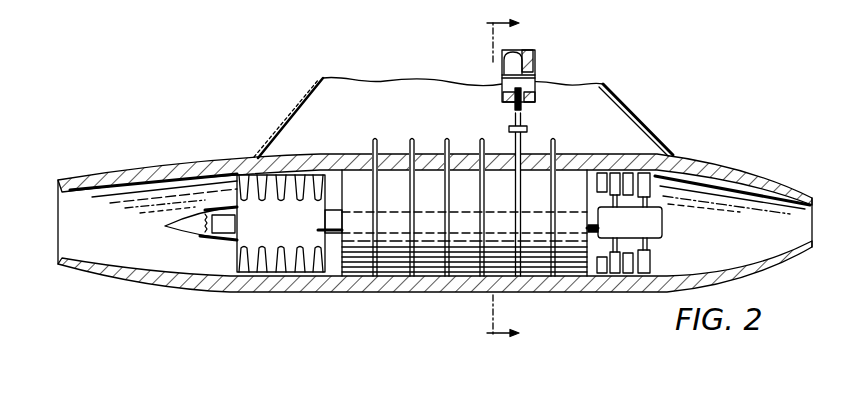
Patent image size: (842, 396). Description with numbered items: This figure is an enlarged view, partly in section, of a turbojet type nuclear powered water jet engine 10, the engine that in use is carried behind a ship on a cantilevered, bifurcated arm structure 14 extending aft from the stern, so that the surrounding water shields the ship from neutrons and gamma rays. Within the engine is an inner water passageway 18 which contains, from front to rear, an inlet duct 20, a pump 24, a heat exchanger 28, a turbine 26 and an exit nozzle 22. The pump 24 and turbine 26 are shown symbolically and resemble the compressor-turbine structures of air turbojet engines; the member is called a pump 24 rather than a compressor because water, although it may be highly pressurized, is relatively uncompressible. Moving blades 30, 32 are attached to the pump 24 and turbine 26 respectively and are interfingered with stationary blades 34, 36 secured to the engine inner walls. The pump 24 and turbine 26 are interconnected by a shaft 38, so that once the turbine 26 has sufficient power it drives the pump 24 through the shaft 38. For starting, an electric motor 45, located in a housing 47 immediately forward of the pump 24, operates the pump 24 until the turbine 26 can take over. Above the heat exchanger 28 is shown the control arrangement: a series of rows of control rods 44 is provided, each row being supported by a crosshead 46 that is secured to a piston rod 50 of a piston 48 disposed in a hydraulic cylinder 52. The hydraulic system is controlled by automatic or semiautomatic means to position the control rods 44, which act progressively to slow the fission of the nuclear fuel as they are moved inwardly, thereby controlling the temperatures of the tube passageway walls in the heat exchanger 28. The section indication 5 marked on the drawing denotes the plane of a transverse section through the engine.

The section line 5- 5 is at (503, 178).
The nuclear powered water jet engine 10 is at (686, 150).
The cantilevered bifurcated arm structure 14 is at (624, 108).
The inner water passageway 18 is at (330, 172).
The inlet duct 20 is at (108, 236).
The exit nozzle 22 is at (766, 236).
The pump 24 is at (281, 223).
The turbine 26 is at (640, 231).
The heat exchanger 28 is at (512, 200).
The moving blades 30 is at (259, 268).
The moving blades 32 is at (645, 248).
The stationary blades 34 is at (302, 270).
The stationary blades 36 is at (627, 274).
The shaft 38 is at (341, 270).
The control rods 44 is at (447, 152).
The electric motor 45 is at (226, 240).
The crosshead 46 is at (527, 129).
The housing 47 is at (192, 234).
The piston 48 is at (503, 78).
The piston rod 50 is at (524, 106).
The hydraulic cylinder 52 is at (534, 61).